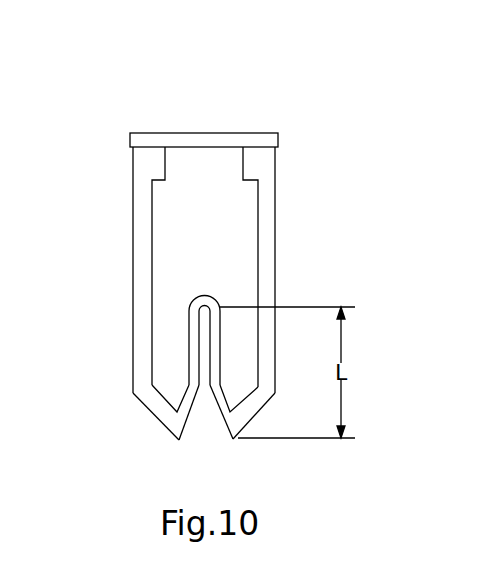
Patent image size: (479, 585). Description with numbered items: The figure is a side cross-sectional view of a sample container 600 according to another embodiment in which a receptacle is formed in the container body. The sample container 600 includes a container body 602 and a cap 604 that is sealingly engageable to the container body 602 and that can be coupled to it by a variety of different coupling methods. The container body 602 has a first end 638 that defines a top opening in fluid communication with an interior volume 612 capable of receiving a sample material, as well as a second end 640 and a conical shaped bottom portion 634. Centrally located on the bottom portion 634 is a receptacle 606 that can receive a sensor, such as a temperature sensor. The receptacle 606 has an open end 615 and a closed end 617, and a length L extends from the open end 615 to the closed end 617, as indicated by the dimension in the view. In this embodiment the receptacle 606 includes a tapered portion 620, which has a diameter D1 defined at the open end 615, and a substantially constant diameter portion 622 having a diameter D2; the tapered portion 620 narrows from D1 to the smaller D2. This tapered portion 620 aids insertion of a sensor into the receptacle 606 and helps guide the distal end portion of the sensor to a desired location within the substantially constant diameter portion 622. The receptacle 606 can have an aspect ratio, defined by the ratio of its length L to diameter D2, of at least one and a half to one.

The sample container 600 is at (265, 92).
The container body 602 is at (276, 255).
The cap 604 is at (139, 133).
The receptacle 606 is at (206, 340).
The interior volume 612 is at (160, 227).
The open end 615 is at (178, 441).
The closed end 617 is at (193, 299).
The tapered portion 620 is at (221, 417).
The substantially constant diameter portion 622 is at (200, 362).
The conical shaped bottom portion 634 is at (141, 402).
The first end 638 is at (133, 158).
The second end 640 is at (232, 438).